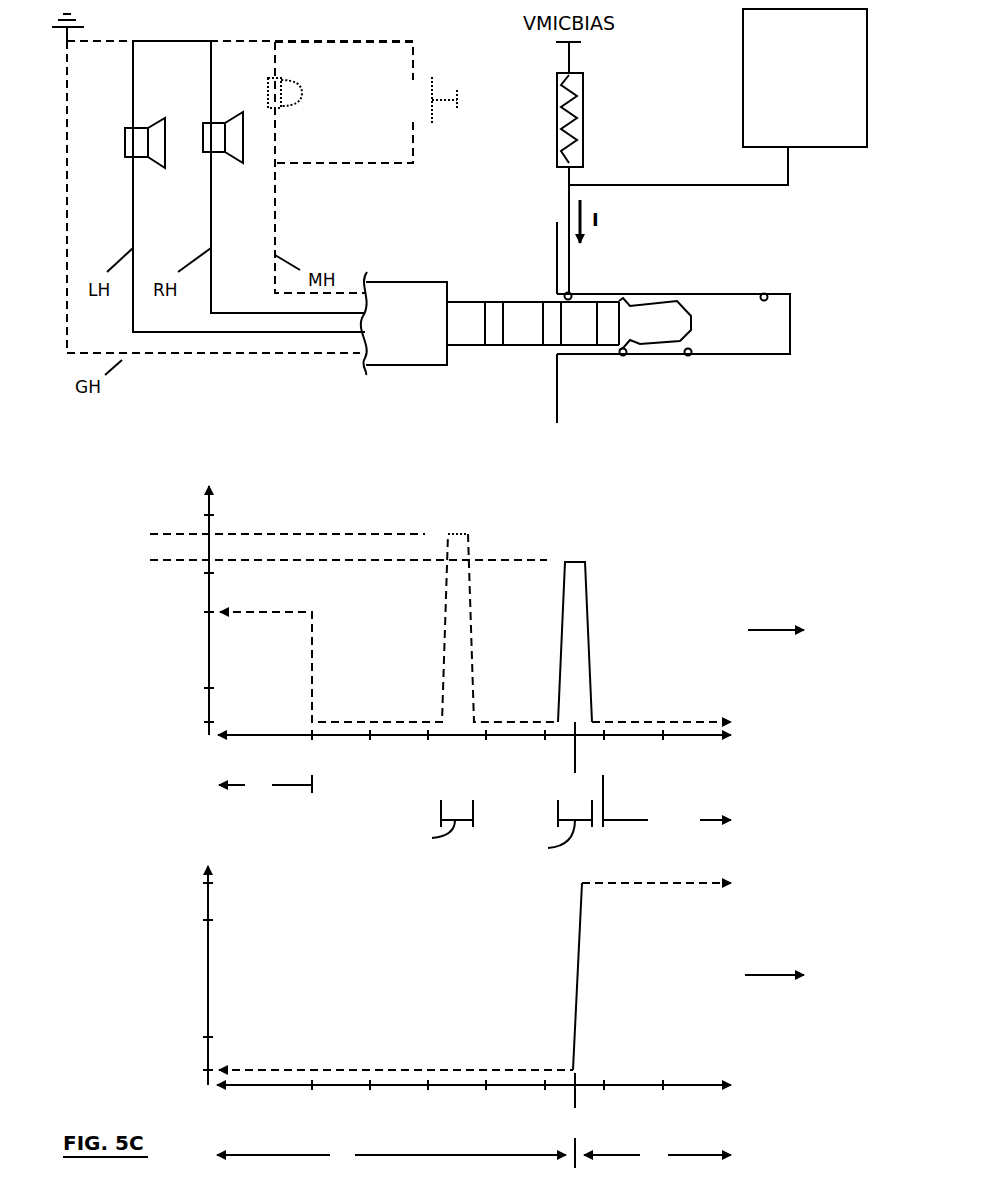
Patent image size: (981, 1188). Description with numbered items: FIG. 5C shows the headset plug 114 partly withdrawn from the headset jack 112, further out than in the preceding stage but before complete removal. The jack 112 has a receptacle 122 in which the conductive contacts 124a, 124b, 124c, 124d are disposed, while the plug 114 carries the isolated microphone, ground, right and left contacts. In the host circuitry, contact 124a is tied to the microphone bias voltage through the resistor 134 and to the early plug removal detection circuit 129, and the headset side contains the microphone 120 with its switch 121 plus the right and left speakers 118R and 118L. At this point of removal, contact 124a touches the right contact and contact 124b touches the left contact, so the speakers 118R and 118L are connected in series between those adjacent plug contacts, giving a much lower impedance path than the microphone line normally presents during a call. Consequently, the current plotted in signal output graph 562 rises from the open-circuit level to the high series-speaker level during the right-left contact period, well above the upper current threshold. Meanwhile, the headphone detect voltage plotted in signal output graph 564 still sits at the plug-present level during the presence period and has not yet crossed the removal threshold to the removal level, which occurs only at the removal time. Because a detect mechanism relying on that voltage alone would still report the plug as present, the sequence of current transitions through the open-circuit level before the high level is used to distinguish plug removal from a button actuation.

The left speaker 118L is at (125, 134).
The right speaker 118R is at (204, 151).
The microphone 120 is at (302, 90).
The switch 121 is at (443, 100).
The resistor 134 is at (583, 118).
The early plug removal detection circuit 129 is at (742, 80).
The headset jack 112 is at (748, 355).
The headset plug 114 is at (415, 366).
The receptacle 122 is at (725, 306).
The jack contact 124a is at (571, 293).
The jack contact 124b is at (621, 356).
The jack contact 124c is at (688, 356).
The jack contact 124d is at (766, 293).
The signal output graph 562 is at (112, 498).
The signal output graph 564 is at (102, 887).